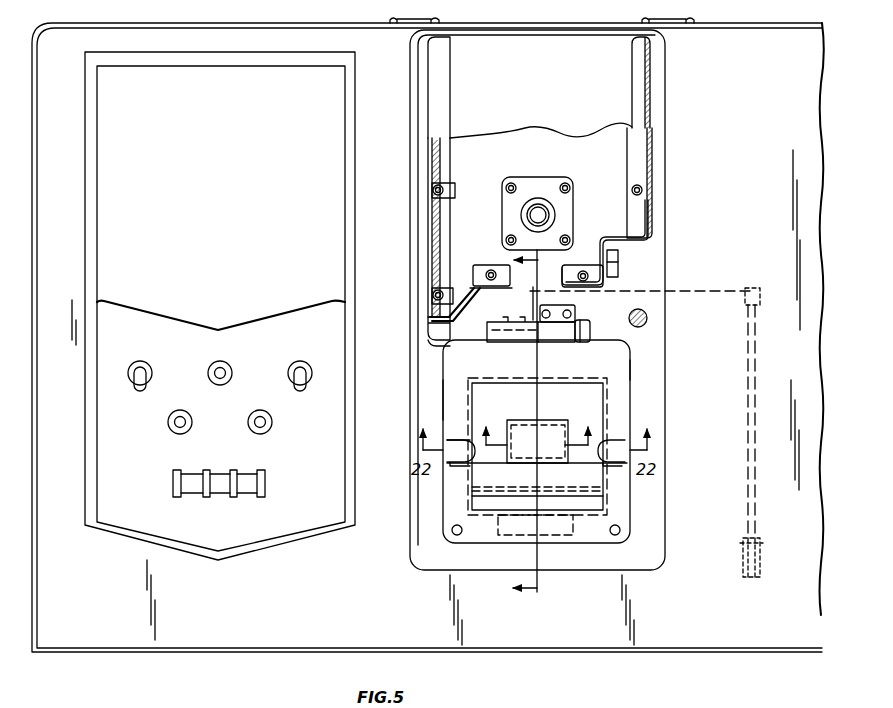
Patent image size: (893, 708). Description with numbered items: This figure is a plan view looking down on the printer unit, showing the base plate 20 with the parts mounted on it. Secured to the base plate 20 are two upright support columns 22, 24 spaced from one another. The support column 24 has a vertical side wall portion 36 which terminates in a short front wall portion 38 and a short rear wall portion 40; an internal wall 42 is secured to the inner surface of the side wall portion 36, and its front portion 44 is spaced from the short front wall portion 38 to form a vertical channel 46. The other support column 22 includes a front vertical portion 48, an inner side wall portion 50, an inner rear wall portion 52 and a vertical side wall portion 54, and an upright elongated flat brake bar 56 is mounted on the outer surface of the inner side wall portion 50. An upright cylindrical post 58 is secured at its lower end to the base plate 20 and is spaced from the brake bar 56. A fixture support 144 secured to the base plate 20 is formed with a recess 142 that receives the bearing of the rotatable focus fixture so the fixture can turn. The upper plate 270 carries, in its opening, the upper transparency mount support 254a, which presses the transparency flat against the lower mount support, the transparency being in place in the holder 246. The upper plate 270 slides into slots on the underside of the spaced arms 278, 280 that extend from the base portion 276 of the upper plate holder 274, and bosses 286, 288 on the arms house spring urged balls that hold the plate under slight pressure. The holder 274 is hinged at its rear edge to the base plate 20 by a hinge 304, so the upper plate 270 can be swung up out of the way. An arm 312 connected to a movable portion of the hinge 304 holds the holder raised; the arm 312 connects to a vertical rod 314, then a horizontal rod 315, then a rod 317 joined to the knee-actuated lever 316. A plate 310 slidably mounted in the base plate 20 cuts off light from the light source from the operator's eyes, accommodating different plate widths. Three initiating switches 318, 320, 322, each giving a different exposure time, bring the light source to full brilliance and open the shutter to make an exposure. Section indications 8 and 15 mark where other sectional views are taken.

The base plate 20 is at (655, 545).
The upright support column 22 is at (652, 159).
The upright support column 24 is at (427, 243).
The vertical side wall portion 36 is at (428, 212).
The short front wall portion 38 is at (432, 344).
The short rear wall portion 40 is at (440, 89).
The internal wall 42 is at (467, 296).
The front portion 44 is at (449, 326).
The vertical channel 46 is at (428, 331).
The front vertical portion 48 is at (594, 268).
The inner side wall portion 50 is at (619, 252).
The inner rear wall portion 52 is at (617, 243).
The vertical side wall portion 54 is at (653, 212).
The brake bar 56 is at (619, 273).
The cylindrical post 58 is at (648, 318).
The recess 142 is at (522, 213).
The fixture support 144 is at (558, 214).
The holder 246 is at (454, 467).
The upper transparency mount support 254a is at (516, 419).
The upper plate 270 is at (591, 409).
The upper plate holder 274 is at (628, 371).
The base portion 276 is at (601, 349).
The arm 278 is at (618, 407).
The arm 280 is at (455, 403).
The boss 286 is at (612, 455).
The boss 288 is at (452, 440).
The hinge 304 is at (512, 328).
The plate 310 is at (523, 483).
The arm 312 is at (545, 293).
The vertical rod 314 is at (536, 290).
The horizontal rod 315 is at (692, 291).
The knee-actuated lever 316 is at (742, 568).
The rod 317 is at (748, 412).
The initiating switch 318 is at (187, 497).
The initiating switch 320 is at (220, 497).
The initiating switch 322 is at (249, 497).
The section line 8 is at (535, 427).
The section line 15 is at (538, 445).